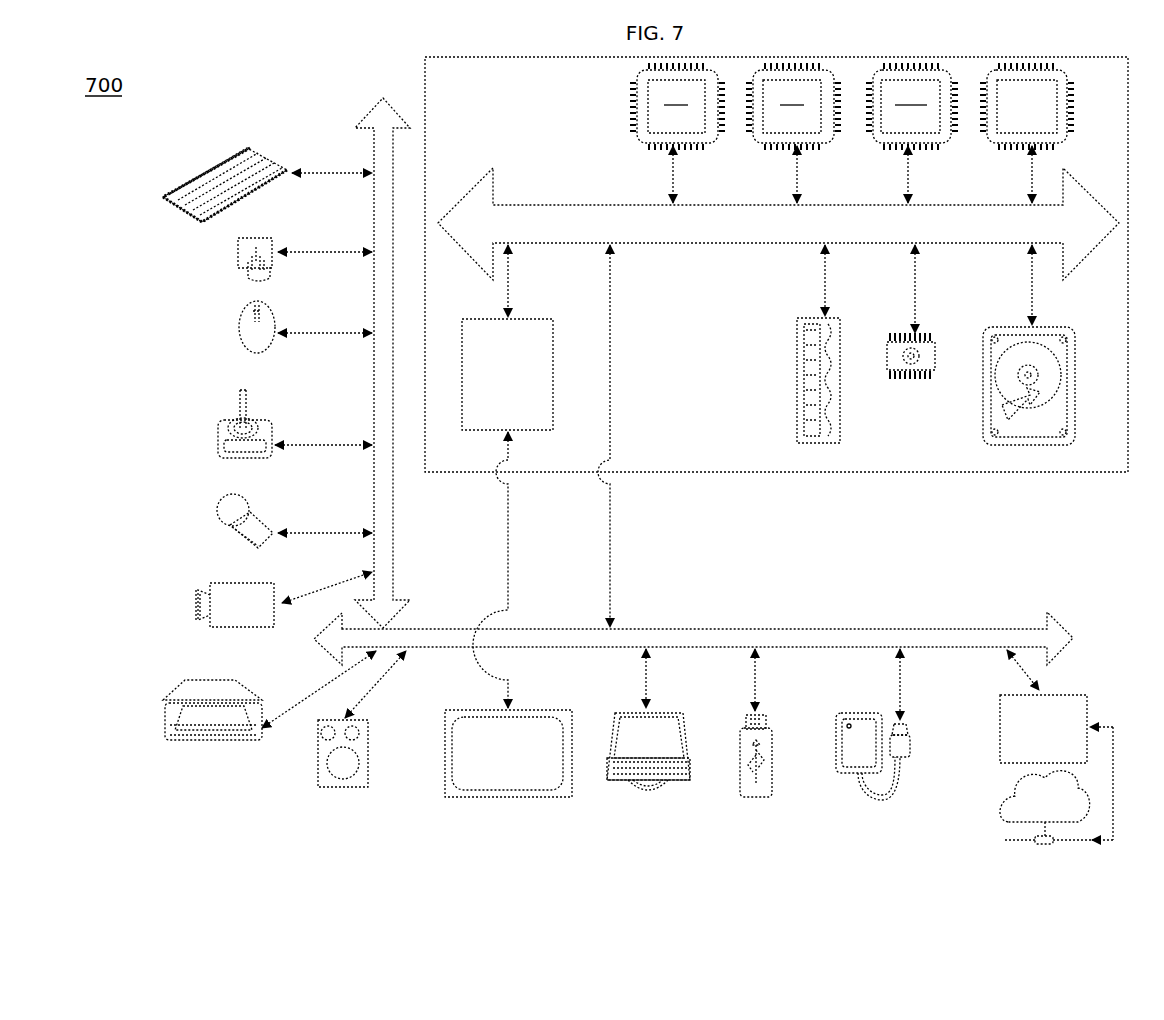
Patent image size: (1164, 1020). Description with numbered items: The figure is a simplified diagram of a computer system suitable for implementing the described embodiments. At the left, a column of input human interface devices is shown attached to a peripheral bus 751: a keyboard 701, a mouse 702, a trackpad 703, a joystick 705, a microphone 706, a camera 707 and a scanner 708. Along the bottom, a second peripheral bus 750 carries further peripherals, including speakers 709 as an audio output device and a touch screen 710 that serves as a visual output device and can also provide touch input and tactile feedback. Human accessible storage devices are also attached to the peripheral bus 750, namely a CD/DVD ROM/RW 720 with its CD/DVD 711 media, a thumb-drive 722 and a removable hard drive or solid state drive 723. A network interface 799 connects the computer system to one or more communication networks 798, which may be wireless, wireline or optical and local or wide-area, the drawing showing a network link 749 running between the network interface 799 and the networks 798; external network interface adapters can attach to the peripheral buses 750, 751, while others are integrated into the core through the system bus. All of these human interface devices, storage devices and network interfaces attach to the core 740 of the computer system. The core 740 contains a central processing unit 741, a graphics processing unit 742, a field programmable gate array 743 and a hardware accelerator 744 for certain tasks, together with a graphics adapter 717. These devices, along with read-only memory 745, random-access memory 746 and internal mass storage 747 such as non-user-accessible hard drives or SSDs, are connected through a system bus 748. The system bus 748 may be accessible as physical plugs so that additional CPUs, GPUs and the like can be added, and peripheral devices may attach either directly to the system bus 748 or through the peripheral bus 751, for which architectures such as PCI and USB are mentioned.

The keyboard 701 is at (165, 197).
The mouse 702 is at (230, 329).
The trackpad 703 is at (223, 264).
The joystick 705 is at (218, 449).
The microphone 706 is at (216, 516).
The camera 707 is at (196, 607).
The scanner 708 is at (166, 734).
The speakers 709 is at (345, 787).
The touch screen 710 is at (507, 797).
The CD/DVD 711 is at (636, 797).
The graphics adapter 717 is at (553, 407).
The CD/DVD ROM/RW 720 is at (684, 793).
The thumb-drive 722 is at (752, 797).
The removable hard drive or solid state drive 723 is at (845, 780).
The core 740 is at (770, 472).
The Central Processing Unit 741 is at (647, 145).
The Graphics Processing Unit 742 is at (762, 145).
The Field Programmable Gate Array 743 is at (880, 145).
The hardware accelerator 744 is at (997, 145).
The read-only memory 745 is at (902, 380).
The random-access memory 746 is at (797, 378).
The internal mass storage 747 is at (1000, 304).
The system bus 748 is at (745, 245).
The network link 749 is at (1115, 745).
The peripheral bus 750 is at (905, 627).
The peripheral bus 751 is at (356, 127).
The communication network 798 is at (1005, 812).
The network interface 799 is at (1000, 700).